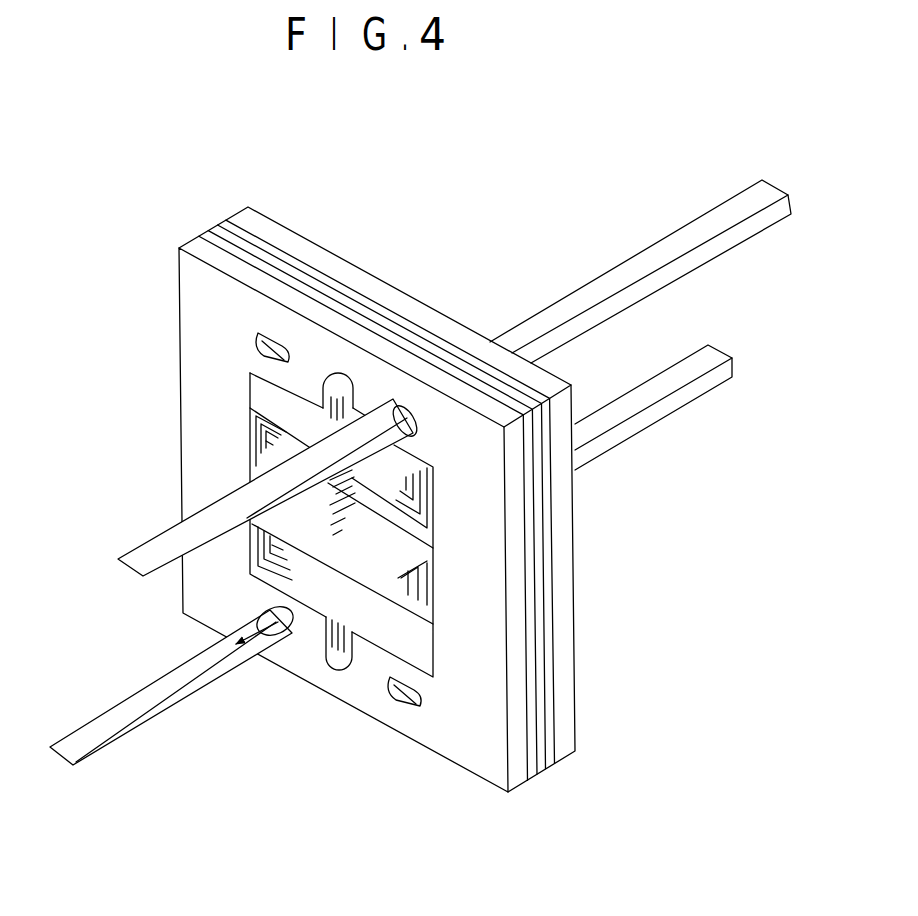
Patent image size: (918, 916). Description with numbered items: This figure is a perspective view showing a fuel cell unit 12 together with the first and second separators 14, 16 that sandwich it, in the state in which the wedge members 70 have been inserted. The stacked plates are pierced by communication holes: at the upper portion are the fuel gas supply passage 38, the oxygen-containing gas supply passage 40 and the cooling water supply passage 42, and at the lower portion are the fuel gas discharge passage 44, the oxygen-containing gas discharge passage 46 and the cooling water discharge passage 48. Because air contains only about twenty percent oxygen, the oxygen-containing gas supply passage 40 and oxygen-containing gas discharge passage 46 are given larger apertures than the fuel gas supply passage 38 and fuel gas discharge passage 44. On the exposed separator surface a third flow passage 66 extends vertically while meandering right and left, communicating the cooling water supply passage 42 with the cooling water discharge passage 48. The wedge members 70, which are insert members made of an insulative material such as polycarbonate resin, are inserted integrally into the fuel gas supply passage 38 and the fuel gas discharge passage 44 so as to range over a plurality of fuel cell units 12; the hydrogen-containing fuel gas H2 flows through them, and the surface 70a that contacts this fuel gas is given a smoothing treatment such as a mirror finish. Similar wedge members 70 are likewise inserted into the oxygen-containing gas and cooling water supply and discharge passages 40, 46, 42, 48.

The fuel cell unit 12 is at (221, 223).
The first separator 14 is at (181, 242).
The second separator 16 is at (300, 229).
The fuel gas supply passage 38 is at (416, 435).
The oxygen-containing gas supply passage 40 is at (252, 337).
The cooling water supply passage 42 is at (334, 372).
The fuel gas discharge passage 44 is at (258, 613).
The oxygen-containing gas discharge passage 46 is at (405, 701).
The cooling water discharge passage 48 is at (332, 665).
The third flow passage 66 is at (417, 588).
The wedge member 70 is at (652, 241).
The surface of the wedge member 70a is at (152, 700).
The hydrogen flow H2 is at (67, 617).